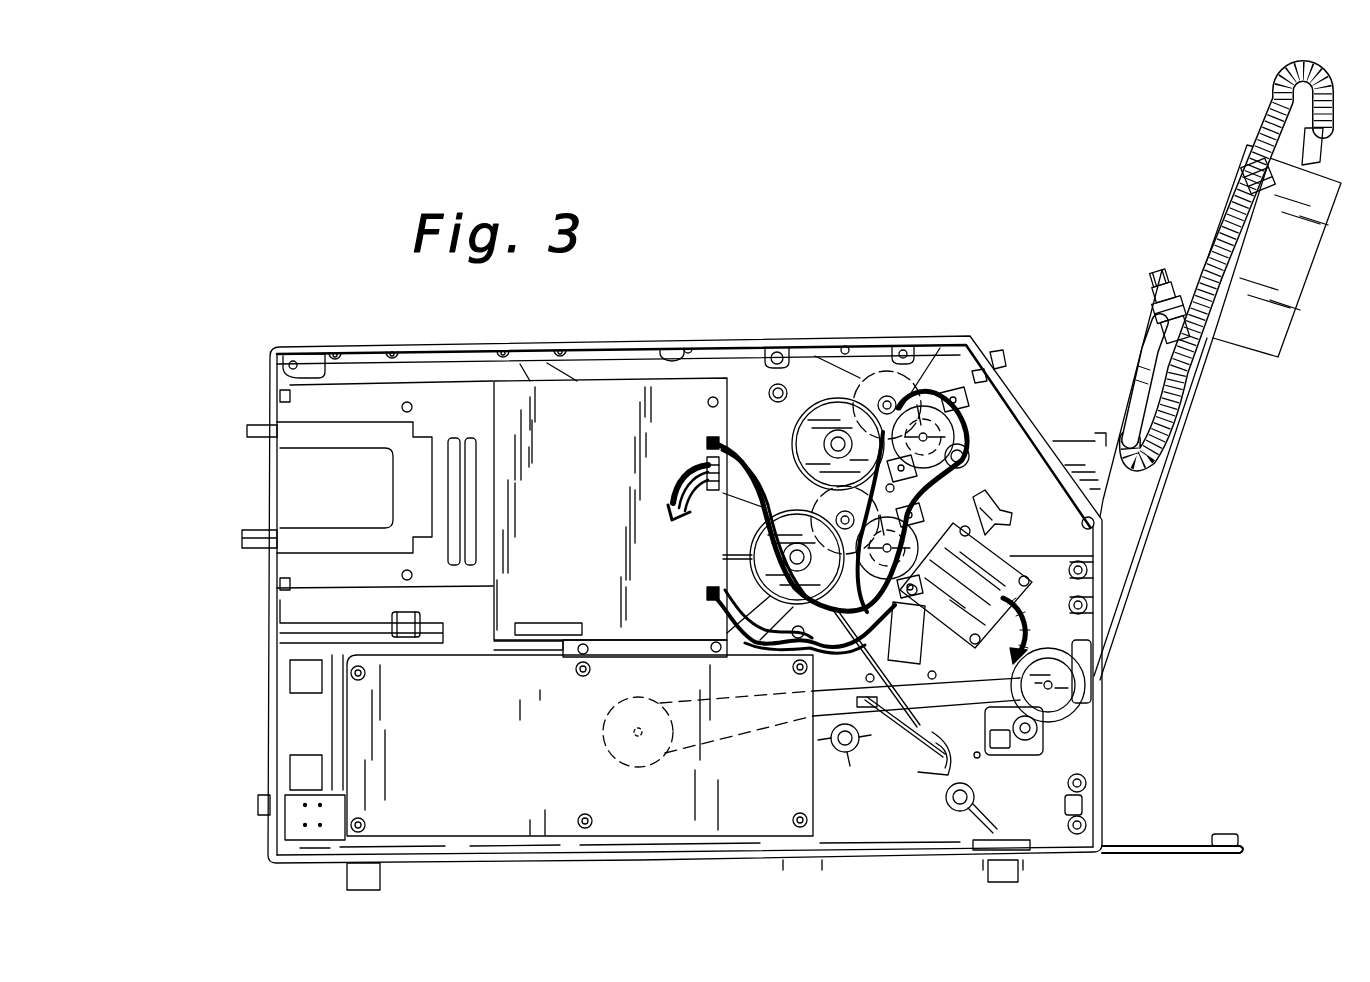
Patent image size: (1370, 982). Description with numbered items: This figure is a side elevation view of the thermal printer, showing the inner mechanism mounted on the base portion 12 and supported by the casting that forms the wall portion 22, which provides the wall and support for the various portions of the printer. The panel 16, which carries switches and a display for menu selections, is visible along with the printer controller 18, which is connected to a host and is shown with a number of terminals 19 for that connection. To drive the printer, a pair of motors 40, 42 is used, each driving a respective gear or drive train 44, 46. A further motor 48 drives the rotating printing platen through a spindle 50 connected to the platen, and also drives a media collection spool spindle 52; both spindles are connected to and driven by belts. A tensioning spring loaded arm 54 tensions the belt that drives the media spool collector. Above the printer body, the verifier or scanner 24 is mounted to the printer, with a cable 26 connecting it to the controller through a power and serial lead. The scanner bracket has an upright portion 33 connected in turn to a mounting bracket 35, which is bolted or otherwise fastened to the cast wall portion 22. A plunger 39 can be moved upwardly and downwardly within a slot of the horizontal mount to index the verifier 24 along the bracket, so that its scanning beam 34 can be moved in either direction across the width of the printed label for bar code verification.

The base portion 12 is at (495, 863).
The panel 16 is at (1008, 370).
The printer controller 18 is at (609, 470).
The terminals 19 is at (238, 420).
The wall portion 22 is at (758, 413).
The verifier or scanner 24 is at (1280, 348).
The cable 26 is at (1270, 125).
The upright portion 33 is at (1145, 357).
The scanning beam 34 is at (1155, 517).
The mounting bracket 35 is at (1125, 493).
The plunger 39 is at (1182, 273).
The motor 40 is at (958, 423).
The motor 42 is at (905, 523).
The gear or drive train 44 is at (816, 394).
The gear or drive train 46 is at (784, 486).
The motor 48 is at (1000, 565).
The spindle 50 is at (1064, 689).
The media collection spool spindle 52 is at (625, 733).
The tensioning spring loaded arm 54 is at (893, 737).